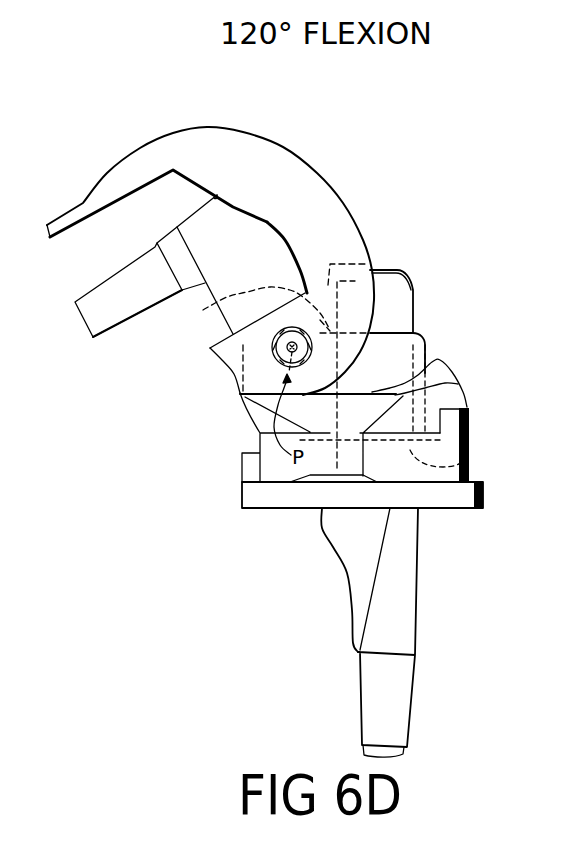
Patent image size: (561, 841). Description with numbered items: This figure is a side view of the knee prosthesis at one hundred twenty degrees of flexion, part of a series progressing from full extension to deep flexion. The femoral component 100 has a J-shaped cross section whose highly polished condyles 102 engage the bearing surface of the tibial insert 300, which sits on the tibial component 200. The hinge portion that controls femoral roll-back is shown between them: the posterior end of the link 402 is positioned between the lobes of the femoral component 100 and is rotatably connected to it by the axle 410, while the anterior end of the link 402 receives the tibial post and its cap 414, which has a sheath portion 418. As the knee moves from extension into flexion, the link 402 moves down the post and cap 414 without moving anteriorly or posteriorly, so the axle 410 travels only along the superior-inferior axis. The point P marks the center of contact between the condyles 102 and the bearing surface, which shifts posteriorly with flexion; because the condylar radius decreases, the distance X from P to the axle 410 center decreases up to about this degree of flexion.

The femoral component 100 is at (231, 286).
The condyles 102 is at (341, 203).
The tibial component 200 is at (234, 498).
The tibial insert 300 is at (234, 429).
The link 402 is at (427, 347).
The axle 410 is at (218, 366).
The cap 414 is at (415, 290).
The sheath portion 418 is at (468, 467).